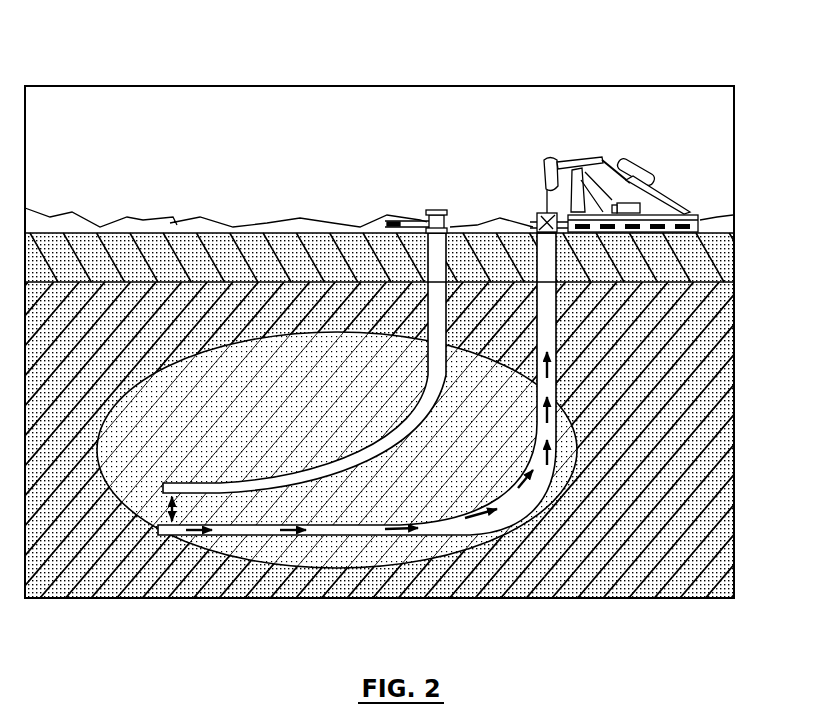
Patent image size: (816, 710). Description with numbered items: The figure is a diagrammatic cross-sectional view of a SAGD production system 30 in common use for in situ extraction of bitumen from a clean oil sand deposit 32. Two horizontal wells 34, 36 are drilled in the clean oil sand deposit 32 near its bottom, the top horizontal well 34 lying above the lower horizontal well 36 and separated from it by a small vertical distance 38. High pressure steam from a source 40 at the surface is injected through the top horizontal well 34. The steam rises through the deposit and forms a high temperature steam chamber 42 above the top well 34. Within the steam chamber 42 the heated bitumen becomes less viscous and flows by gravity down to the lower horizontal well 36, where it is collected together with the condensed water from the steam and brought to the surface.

The SAGD production system 30 is at (600, 160).
The clean oil sand deposit 32 is at (697, 365).
The top horizontal well 34 is at (188, 483).
The lower horizontal well 36 is at (233, 534).
The small vertical distance 38 is at (170, 505).
The source 40 is at (437, 208).
The high temperature steam chamber 42 is at (263, 395).